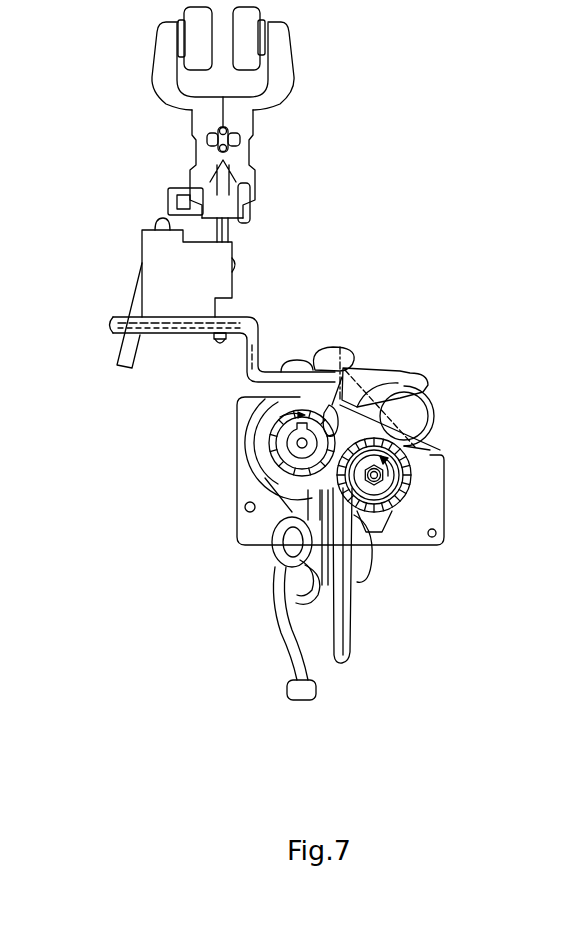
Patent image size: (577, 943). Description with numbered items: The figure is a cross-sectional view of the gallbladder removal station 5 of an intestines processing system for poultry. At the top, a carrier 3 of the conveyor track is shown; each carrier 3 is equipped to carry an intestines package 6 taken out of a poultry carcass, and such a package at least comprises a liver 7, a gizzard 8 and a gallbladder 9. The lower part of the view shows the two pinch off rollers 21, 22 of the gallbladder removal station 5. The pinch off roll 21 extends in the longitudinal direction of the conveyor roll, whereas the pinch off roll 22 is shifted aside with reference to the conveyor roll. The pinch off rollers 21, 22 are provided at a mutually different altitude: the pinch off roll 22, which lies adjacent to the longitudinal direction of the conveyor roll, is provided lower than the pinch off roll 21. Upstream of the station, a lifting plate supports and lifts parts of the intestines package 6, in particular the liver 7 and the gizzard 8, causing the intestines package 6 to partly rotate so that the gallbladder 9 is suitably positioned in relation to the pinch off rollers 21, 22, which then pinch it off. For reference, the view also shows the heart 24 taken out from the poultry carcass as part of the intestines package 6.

The carrier 3 is at (158, 157).
The gallbladder removal station 5 is at (192, 431).
The intestines package 6 is at (275, 590).
The liver 7 is at (372, 364).
The gizzard 8 is at (428, 410).
The gallbladder 9 is at (329, 398).
The pinch off roll 21 is at (263, 438).
The pinch off roll 22 is at (391, 527).
The heart 24 is at (334, 330).